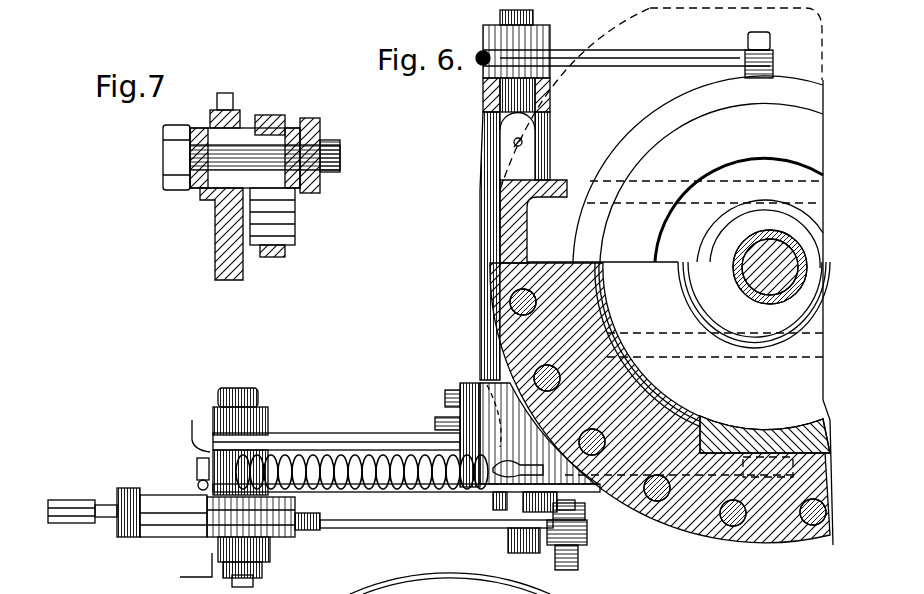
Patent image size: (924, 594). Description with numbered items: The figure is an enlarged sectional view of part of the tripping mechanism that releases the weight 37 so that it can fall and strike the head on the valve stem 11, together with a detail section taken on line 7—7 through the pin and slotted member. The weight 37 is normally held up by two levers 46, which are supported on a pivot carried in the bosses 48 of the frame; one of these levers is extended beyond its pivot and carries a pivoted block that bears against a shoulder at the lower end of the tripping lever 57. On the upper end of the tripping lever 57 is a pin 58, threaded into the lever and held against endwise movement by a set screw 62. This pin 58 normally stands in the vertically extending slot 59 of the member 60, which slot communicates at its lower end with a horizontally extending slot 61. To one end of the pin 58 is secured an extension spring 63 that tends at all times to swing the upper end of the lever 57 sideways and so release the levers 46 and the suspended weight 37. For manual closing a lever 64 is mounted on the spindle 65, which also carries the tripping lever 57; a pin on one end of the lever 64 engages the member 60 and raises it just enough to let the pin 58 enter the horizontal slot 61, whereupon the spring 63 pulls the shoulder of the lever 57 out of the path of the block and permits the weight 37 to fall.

In FIG. 6, the chamber 7 is at (187, 495).
In FIG. 6, the stem 11 is at (787, 290).
In FIG. 6, the weight 37 is at (698, 169).
In FIG. 6, the levers 46 is at (635, 537).
In FIG. 6, the bosses 48 is at (483, 165).
In FIG. 7, the tripping lever 57 is at (218, 264).
In FIG. 7, the pin 58 is at (276, 126).
In FIG. 6, the pin 58 is at (207, 540).
In FIG. 7, the vertically extending slot 59 is at (312, 183).
In FIG. 7, the member 60 is at (273, 258).
In FIG. 6, the member 60 is at (188, 497).
In FIG. 7, the horizontally extending slot 61 is at (291, 226).
In FIG. 7, the set screw 62 is at (229, 98).
In FIG. 6, the extension spring 63 is at (355, 453).
In FIG. 6, the lever 64 is at (392, 532).
In FIG. 6, the spindle 65 is at (257, 582).